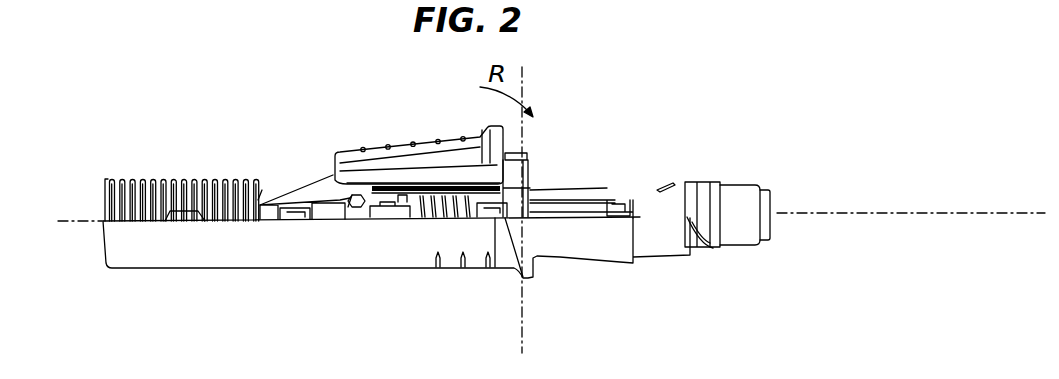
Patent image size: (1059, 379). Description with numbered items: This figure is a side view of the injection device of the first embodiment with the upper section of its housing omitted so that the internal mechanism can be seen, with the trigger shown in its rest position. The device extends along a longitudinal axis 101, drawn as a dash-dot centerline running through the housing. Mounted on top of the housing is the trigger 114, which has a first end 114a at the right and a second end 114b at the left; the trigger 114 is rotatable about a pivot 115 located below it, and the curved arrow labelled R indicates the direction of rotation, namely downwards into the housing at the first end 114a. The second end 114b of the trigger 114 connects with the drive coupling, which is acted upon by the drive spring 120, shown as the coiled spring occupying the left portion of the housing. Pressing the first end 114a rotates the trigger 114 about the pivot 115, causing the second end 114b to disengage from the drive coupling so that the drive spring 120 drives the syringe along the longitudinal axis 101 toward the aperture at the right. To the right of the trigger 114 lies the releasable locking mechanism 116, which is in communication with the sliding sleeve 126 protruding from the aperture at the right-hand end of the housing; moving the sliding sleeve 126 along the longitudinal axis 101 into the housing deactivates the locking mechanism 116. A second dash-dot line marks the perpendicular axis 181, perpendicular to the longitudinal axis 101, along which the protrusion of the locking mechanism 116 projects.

The longitudinal axis 101 is at (797, 216).
The trigger 114 is at (376, 153).
The first end 114a is at (504, 153).
The second end 114b is at (259, 199).
The pivot 115 is at (349, 207).
The releasable locking mechanism 116 is at (605, 198).
The drive spring 120 is at (120, 180).
The sliding sleeve 126 is at (772, 188).
The perpendicular axis 181 is at (523, 334).